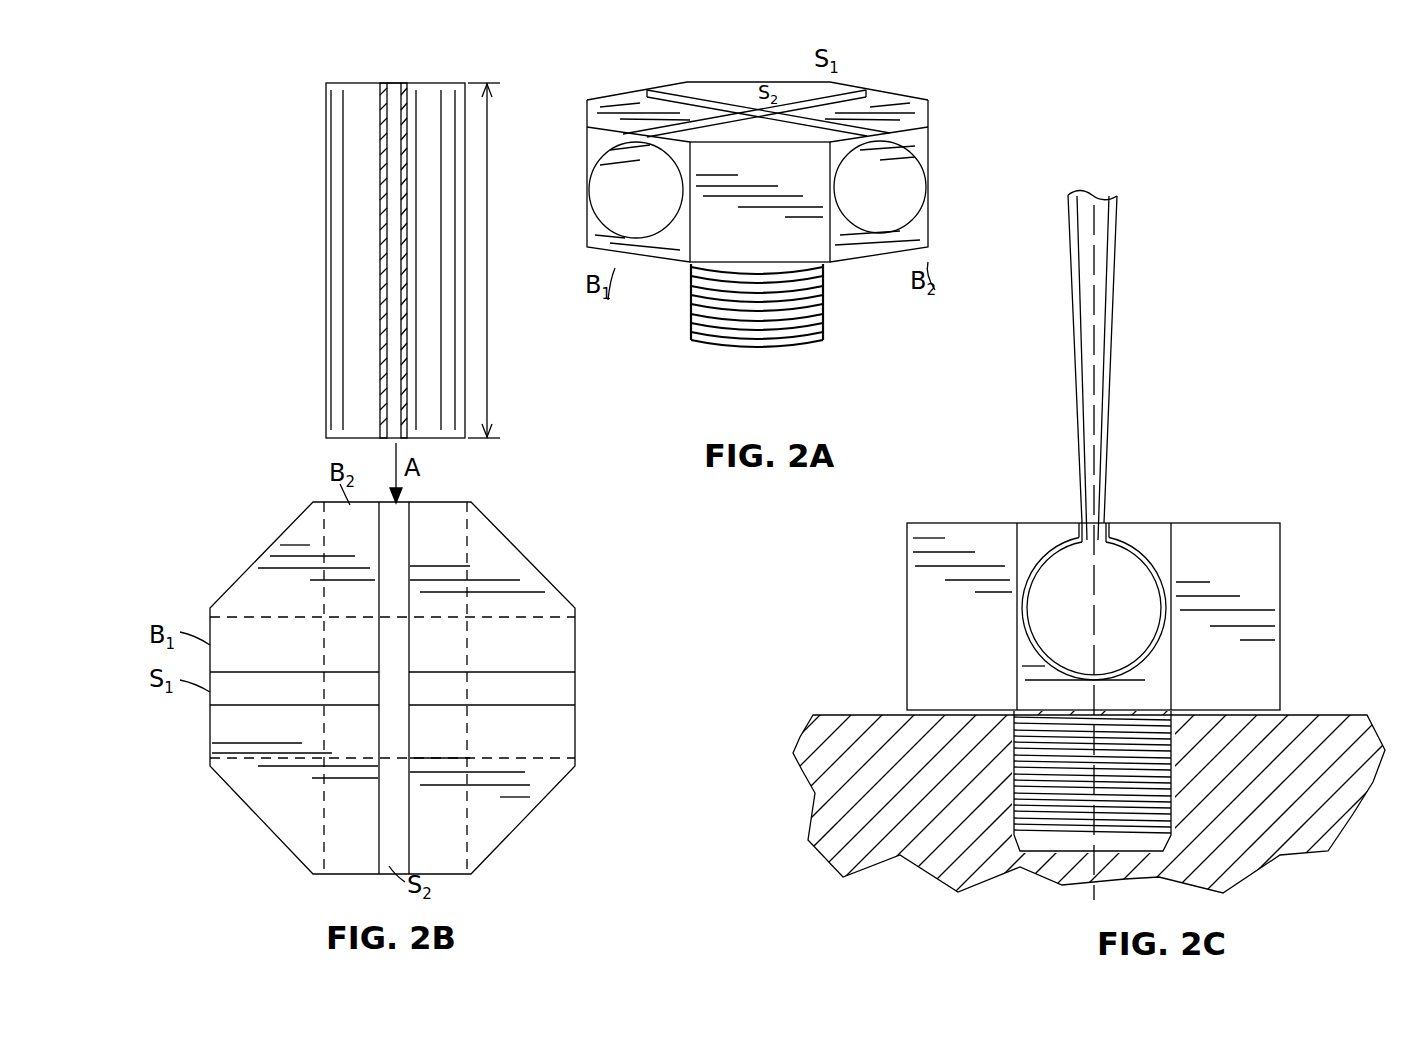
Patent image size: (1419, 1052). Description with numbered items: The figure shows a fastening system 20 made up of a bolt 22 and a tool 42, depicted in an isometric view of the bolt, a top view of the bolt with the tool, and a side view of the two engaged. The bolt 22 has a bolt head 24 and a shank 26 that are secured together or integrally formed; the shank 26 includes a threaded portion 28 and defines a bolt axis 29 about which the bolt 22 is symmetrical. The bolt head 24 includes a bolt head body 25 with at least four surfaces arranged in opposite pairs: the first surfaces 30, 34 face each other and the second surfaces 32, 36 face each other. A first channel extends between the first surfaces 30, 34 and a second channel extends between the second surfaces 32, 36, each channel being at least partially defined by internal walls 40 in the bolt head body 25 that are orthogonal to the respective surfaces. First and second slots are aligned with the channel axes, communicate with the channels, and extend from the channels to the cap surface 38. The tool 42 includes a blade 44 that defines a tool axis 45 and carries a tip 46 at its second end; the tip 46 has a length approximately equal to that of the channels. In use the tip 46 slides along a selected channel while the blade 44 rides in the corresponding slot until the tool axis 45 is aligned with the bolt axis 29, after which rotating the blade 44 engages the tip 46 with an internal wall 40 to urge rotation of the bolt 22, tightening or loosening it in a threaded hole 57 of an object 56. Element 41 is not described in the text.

In FIG. 2A, the fastening system 20 is at (205, 423).
In FIG. 2A, the bolt 22 is at (738, 75).
In FIG. 2C, the bolt head 24 is at (903, 619).
In FIG. 2C, the bolt head body 25 is at (1248, 575).
In FIG. 2A, the shank 26 is at (826, 297).
In FIG. 2C, the shank 26 is at (1150, 766).
In FIG. 2A, the threaded portion 28 is at (690, 330).
In FIG. 2C, the threaded portion 28 is at (1014, 764).
In FIG. 2C, the bolt axis 29 is at (1090, 863).
In FIG. 2A, the first surface 30 is at (672, 255).
In FIG. 2B, the first surface 30 is at (210, 730).
In FIG. 2B, the second surface 32 is at (442, 502).
In FIG. 2B, the first surface 34 is at (575, 716).
In FIG. 2A, the second surface 36 is at (918, 232).
In FIG. 2B, the second surface 36 is at (342, 874).
In FIG. 2C, the second surface 36 is at (1144, 528).
In FIG. 2A, the cap surface 38 is at (895, 105).
In FIG. 2C, the cap surface 38 is at (1213, 523).
In FIG. 2A, the internal walls 40 is at (908, 178).
In FIG. 2A, the left recess 41 is at (600, 193).
In FIG. 2A, the tool 42 is at (322, 150).
In FIG. 2C, the tool 42 is at (1128, 254).
In FIG. 2A, the blade 44 is at (380, 106).
In FIG. 2C, the blade 44 is at (1078, 482).
In FIG. 2C, the tool axis 45 is at (1095, 370).
In FIG. 2A, the tip 46 is at (352, 362).
In FIG. 2C, the tip 46 is at (1143, 630).
In FIG. 2C, the object 56 is at (840, 730).
In FIG. 2C, the threaded hole 57 is at (1165, 843).